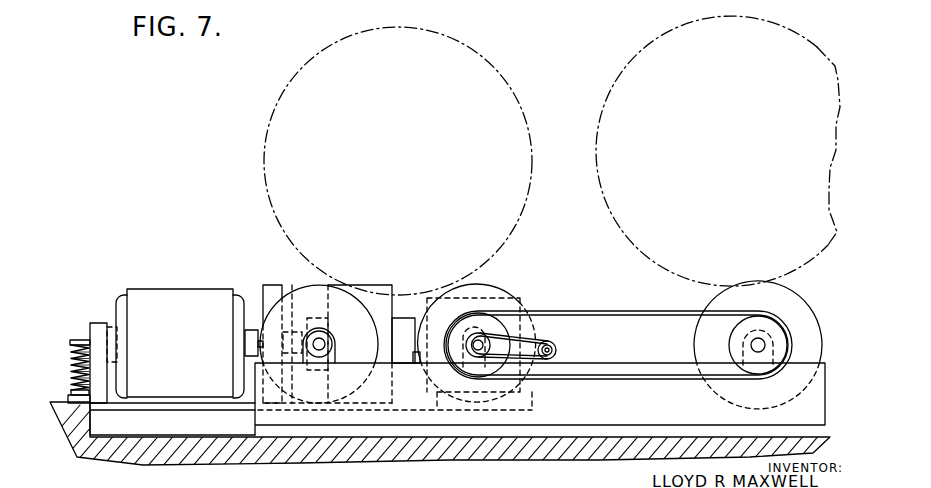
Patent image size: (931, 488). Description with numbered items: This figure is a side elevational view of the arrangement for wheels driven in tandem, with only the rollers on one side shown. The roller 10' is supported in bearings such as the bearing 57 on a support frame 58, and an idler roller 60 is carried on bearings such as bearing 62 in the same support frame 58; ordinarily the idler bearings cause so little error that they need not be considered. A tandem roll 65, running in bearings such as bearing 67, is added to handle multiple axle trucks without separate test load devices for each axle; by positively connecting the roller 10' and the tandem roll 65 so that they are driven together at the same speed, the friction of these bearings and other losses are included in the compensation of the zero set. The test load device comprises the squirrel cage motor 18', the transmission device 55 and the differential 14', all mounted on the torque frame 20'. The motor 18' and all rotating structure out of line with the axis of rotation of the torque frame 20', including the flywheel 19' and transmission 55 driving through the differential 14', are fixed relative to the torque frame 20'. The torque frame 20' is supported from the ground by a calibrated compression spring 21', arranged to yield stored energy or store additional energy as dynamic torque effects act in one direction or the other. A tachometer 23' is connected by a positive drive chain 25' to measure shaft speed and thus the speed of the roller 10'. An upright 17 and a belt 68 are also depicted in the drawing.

The tachometer 23' is at (398, 147).
The idler roller 60 is at (316, 284).
The bearing 62 is at (334, 344).
The transmission device 55 is at (373, 287).
The flywheel 19' is at (248, 328).
The bracket 17 is at (292, 285).
The squirrel cage motor 18' is at (176, 346).
The calibrated compression spring 21' is at (66, 357).
The torque frame 20' is at (172, 445).
The differential 14' is at (477, 336).
The bearing 57 is at (464, 340).
The roller 10' is at (547, 317).
The chain 25' is at (532, 340).
The belt 68 is at (614, 305).
The support frame 58 is at (618, 366).
The tandem roll 65 is at (801, 306).
The bearing 67 is at (776, 345).